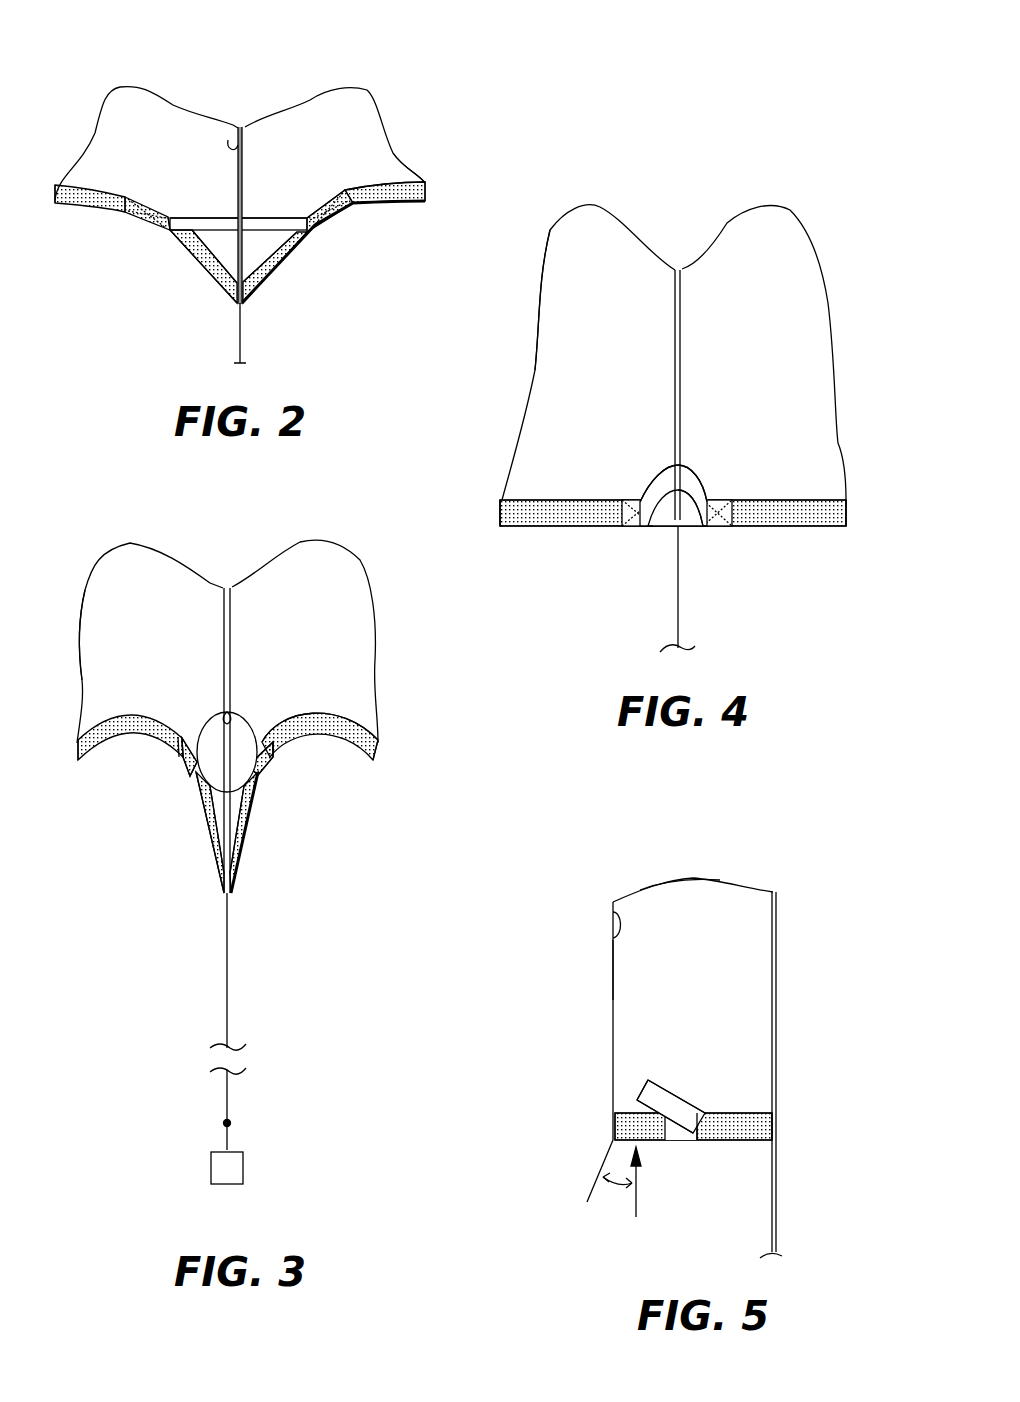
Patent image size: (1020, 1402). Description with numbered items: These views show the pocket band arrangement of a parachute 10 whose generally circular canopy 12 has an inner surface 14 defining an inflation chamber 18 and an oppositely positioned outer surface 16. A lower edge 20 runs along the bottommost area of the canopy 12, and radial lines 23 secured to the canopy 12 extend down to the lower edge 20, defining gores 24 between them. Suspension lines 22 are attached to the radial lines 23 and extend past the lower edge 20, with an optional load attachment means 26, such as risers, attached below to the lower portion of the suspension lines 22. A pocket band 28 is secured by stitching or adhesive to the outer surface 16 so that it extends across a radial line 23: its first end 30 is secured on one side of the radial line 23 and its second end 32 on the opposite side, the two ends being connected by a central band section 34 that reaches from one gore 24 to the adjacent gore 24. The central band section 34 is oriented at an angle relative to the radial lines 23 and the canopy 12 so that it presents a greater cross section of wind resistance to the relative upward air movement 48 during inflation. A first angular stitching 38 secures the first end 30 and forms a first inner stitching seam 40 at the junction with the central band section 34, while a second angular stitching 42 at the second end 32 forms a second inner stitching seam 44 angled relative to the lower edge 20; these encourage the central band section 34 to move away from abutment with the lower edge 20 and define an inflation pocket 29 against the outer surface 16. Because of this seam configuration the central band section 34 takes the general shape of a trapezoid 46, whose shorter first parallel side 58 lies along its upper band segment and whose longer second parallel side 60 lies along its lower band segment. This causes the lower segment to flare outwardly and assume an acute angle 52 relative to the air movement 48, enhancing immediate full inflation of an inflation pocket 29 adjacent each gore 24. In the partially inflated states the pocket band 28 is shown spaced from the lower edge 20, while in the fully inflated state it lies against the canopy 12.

In FIG. 2, the parachute 10 is at (128, 88).
In FIG. 3, the parachute 10 is at (128, 545).
In FIG. 2, the canopy 12 is at (128, 152).
In FIG. 3, the canopy 12 is at (298, 649).
In FIG. 4, the canopy 12 is at (723, 342).
In FIG. 5, the canopy 12 is at (723, 927).
In FIG. 5, the inner surface 14 is at (615, 918).
In FIG. 2, the outer surface 16 is at (345, 97).
In FIG. 3, the outer surface 16 is at (100, 700).
In FIG. 4, the outer surface 16 is at (533, 372).
In FIG. 5, the outer surface 16 is at (620, 972).
In FIG. 5, the inflation chamber 18 is at (692, 878).
In FIG. 2, the lower edge 20 is at (210, 252).
In FIG. 3, the lower edge 20 is at (340, 748).
In FIG. 4, the lower edge 20 is at (820, 528).
In FIG. 5, the lower edge 20 is at (738, 1142).
In FIG. 2, the suspension lines 22 is at (243, 334).
In FIG. 3, the suspension lines 22 is at (230, 926).
In FIG. 4, the suspension lines 22 is at (682, 612).
In FIG. 5, the suspension lines 22 is at (778, 1238).
In FIG. 2, the radial lines 23 is at (237, 127).
In FIG. 3, the radial lines 23 is at (223, 616).
In FIG. 4, the radial lines 23 is at (676, 308).
In FIG. 5, the radial lines 23 is at (778, 940).
In FIG. 2, the gores 24 is at (180, 242).
In FIG. 3, the gores 24 is at (205, 792).
In FIG. 4, the gores 24 is at (710, 466).
In FIG. 3, the load attachment means 26 is at (230, 1122).
In FIG. 2, the pocket band 28 is at (262, 249).
In FIG. 3, the pocket band 28 is at (209, 760).
In FIG. 4, the pocket band 28 is at (650, 496).
In FIG. 5, the pocket band 28 is at (660, 1102).
In FIG. 2, the inflation pocket 29 is at (283, 258).
In FIG. 3, the inflation pocket 29 is at (248, 796).
In FIG. 2, the first end 30 is at (137, 213).
In FIG. 3, the first end 30 is at (182, 762).
In FIG. 4, the first end 30 is at (618, 526).
In FIG. 5, the first end 30 is at (670, 1142).
In FIG. 2, the second end 32 is at (356, 184).
In FIG. 3, the second end 32 is at (273, 782).
In FIG. 4, the second end 32 is at (723, 498).
In FIG. 2, the central band section 34 is at (247, 222).
In FIG. 3, the central band section 34 is at (238, 760).
In FIG. 4, the central band section 34 is at (700, 460).
In FIG. 5, the central band section 34 is at (658, 1100).
In FIG. 2, the first angular stitching 38 is at (132, 222).
In FIG. 4, the first angular stitching 38 is at (638, 526).
In FIG. 2, the first inner stitching seam 40 is at (176, 218).
In FIG. 3, the first inner stitching seam 40 is at (256, 776).
In FIG. 4, the first inner stitching seam 40 is at (650, 528).
In FIG. 5, the first inner stitching seam 40 is at (697, 1141).
In FIG. 2, the second angular stitching 42 is at (325, 228).
In FIG. 4, the second angular stitching 42 is at (727, 526).
In FIG. 2, the second inner stitching seam 44 is at (345, 198).
In FIG. 4, the second inner stitching seam 44 is at (703, 528).
In FIG. 2, the trapezoid 46 is at (231, 140).
In FIG. 5, the relative air direction movement 48 is at (637, 1203).
In FIG. 5, the acute angle 52 is at (612, 1187).
In FIG. 2, the first parallel side 58 is at (282, 220).
In FIG. 5, the first parallel side 58 is at (648, 1080).
In FIG. 2, the second parallel side 60 is at (231, 281).
In FIG. 5, the second parallel side 60 is at (634, 1108).